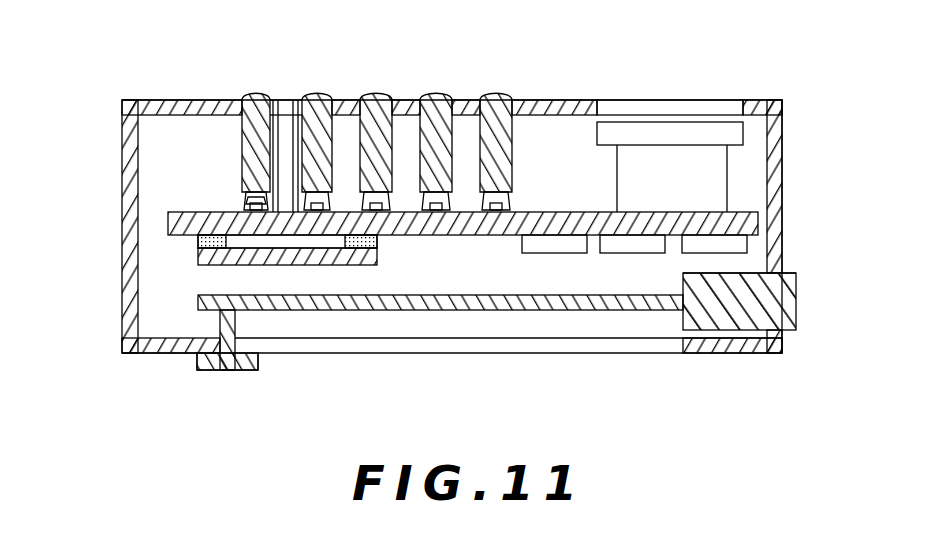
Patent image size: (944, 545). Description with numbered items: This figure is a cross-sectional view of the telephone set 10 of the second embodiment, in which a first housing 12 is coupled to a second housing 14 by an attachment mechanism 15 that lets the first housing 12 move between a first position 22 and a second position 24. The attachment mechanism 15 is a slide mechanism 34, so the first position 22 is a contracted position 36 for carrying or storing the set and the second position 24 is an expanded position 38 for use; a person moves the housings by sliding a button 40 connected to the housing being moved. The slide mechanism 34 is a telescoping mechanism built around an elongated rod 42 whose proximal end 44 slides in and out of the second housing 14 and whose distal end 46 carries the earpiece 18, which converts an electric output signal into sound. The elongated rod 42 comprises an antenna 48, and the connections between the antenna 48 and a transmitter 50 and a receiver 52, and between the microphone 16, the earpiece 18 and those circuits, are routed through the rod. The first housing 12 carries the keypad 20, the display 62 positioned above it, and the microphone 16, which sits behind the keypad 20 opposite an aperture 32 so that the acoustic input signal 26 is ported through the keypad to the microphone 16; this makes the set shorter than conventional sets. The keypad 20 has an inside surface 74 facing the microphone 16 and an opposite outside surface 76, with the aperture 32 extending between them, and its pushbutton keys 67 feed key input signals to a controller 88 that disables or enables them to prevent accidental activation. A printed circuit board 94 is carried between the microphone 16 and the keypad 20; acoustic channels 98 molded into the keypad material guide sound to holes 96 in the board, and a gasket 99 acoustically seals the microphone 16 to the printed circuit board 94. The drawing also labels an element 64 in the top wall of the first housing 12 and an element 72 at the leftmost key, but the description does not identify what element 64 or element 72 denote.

The telephone set 10 is at (781, 445).
The first housing 12 is at (122, 290).
The second housing 14 is at (628, 357).
The attachment mechanism 15 is at (251, 412).
The microphone 16 is at (358, 262).
The earpiece 18 is at (797, 322).
The keypad 20 is at (437, 92).
The first position 22 is at (394, 404).
The second position 24 is at (505, 404).
The acoustic input signal 26 is at (286, 93).
The aperture 32 is at (286, 100).
The slide mechanism 34 is at (270, 370).
The contracted position 36 is at (453, 385).
The expanded position 38 is at (453, 385).
The button 40 is at (215, 371).
The elongated rod 42 is at (636, 313).
The proximal end 44 is at (198, 302).
The distal end 46 is at (792, 273).
The antenna 48 is at (562, 310).
The transmitter 50 is at (532, 253).
The receiver 52 is at (613, 253).
The display 62 is at (745, 133).
The window 64 is at (727, 112).
The pushbutton keys 67 is at (495, 92).
The contact 72 is at (243, 104).
The inside surface 74 is at (238, 210).
The outside surface 76 is at (325, 94).
The controller 88 is at (688, 253).
The printed circuit board 94 is at (175, 213).
The holes 96 is at (290, 238).
The acoustic channels 98 is at (250, 95).
The gasket 99 is at (205, 240).